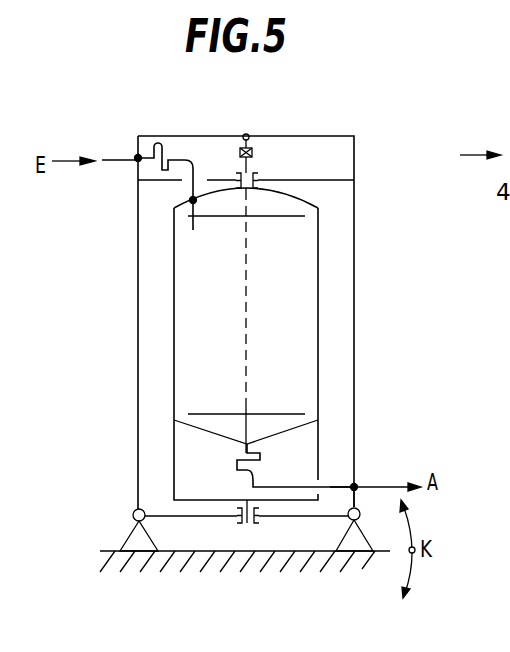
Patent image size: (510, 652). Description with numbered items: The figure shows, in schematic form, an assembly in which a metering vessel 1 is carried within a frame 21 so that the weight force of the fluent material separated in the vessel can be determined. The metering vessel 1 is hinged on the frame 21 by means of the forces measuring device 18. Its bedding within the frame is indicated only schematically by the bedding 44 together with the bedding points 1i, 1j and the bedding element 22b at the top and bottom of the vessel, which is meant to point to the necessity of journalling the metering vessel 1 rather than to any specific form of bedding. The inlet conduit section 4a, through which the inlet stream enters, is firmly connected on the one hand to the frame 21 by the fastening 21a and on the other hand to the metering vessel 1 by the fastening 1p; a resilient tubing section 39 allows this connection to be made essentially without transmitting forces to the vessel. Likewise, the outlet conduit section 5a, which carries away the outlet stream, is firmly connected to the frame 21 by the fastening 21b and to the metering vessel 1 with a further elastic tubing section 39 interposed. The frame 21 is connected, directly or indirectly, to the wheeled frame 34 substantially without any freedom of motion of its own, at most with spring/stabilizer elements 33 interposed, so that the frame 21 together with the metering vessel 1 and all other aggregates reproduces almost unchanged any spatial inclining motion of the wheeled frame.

The metering vessel 1 is at (318, 312).
The fastening 1p is at (192, 200).
The bedding point of metering vessel 1i is at (234, 142).
The bedding point of metering vessel 1j is at (242, 525).
The inlet conduit section 4a is at (113, 162).
The outlet conduit section 5a is at (338, 485).
The forces measuring device 18 is at (252, 152).
The frame 21 is at (354, 222).
The fastening 21a is at (137, 156).
The fastening 21b is at (356, 484).
The bedding element 22b is at (242, 177).
The spring/stabilizer elements 33 is at (140, 538).
The wheeled frame 34 is at (118, 562).
The resilient tubing section 39 is at (168, 160).
The bedding 44 is at (233, 352).